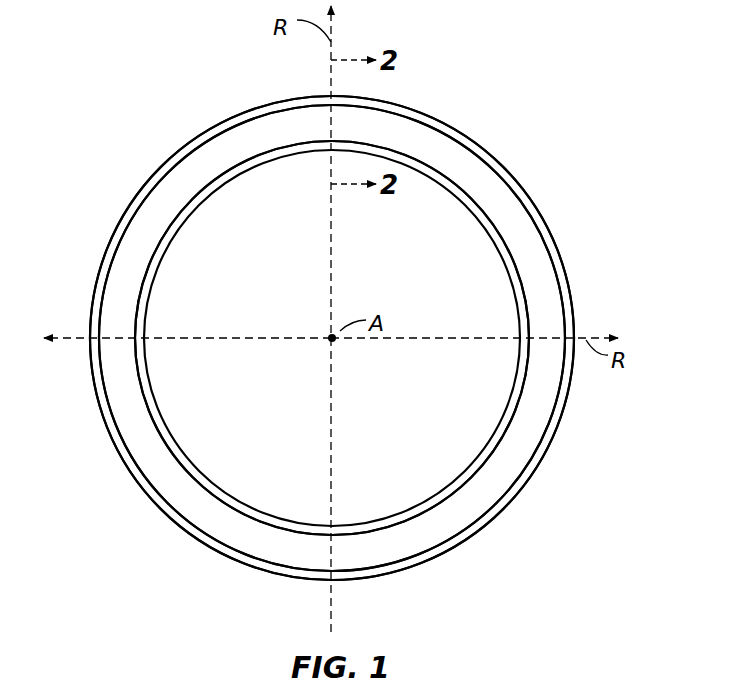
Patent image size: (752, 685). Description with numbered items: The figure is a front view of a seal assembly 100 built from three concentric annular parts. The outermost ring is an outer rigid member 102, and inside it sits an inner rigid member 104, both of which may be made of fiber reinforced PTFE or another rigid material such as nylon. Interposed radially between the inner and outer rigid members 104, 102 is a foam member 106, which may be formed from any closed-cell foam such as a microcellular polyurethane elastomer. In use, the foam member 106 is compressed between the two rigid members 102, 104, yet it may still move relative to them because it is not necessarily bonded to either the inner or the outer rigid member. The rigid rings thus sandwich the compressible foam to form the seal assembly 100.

The seal assembly 100 is at (536, 90).
The outer rigid member 102 is at (533, 211).
The inner rigid member 104 is at (462, 197).
The foam member 106 is at (547, 280).